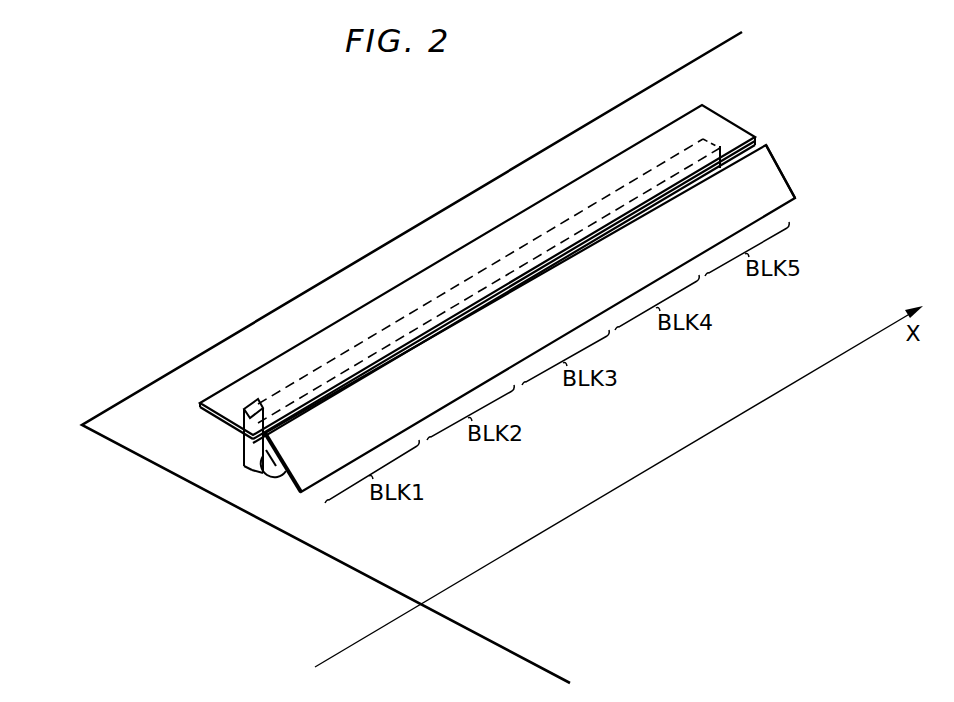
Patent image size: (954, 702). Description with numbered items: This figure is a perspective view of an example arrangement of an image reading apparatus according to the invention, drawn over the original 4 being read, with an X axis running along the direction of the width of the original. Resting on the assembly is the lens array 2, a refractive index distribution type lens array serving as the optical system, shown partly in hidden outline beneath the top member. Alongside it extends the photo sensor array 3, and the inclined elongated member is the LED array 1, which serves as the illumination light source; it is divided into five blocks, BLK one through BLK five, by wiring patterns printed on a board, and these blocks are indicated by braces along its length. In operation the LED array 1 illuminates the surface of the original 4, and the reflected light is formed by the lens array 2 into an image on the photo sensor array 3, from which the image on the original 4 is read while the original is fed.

The LED array 1 is at (769, 162).
The lens array 2 is at (714, 137).
The photo sensor array 3 is at (711, 113).
The original 4 is at (546, 152).